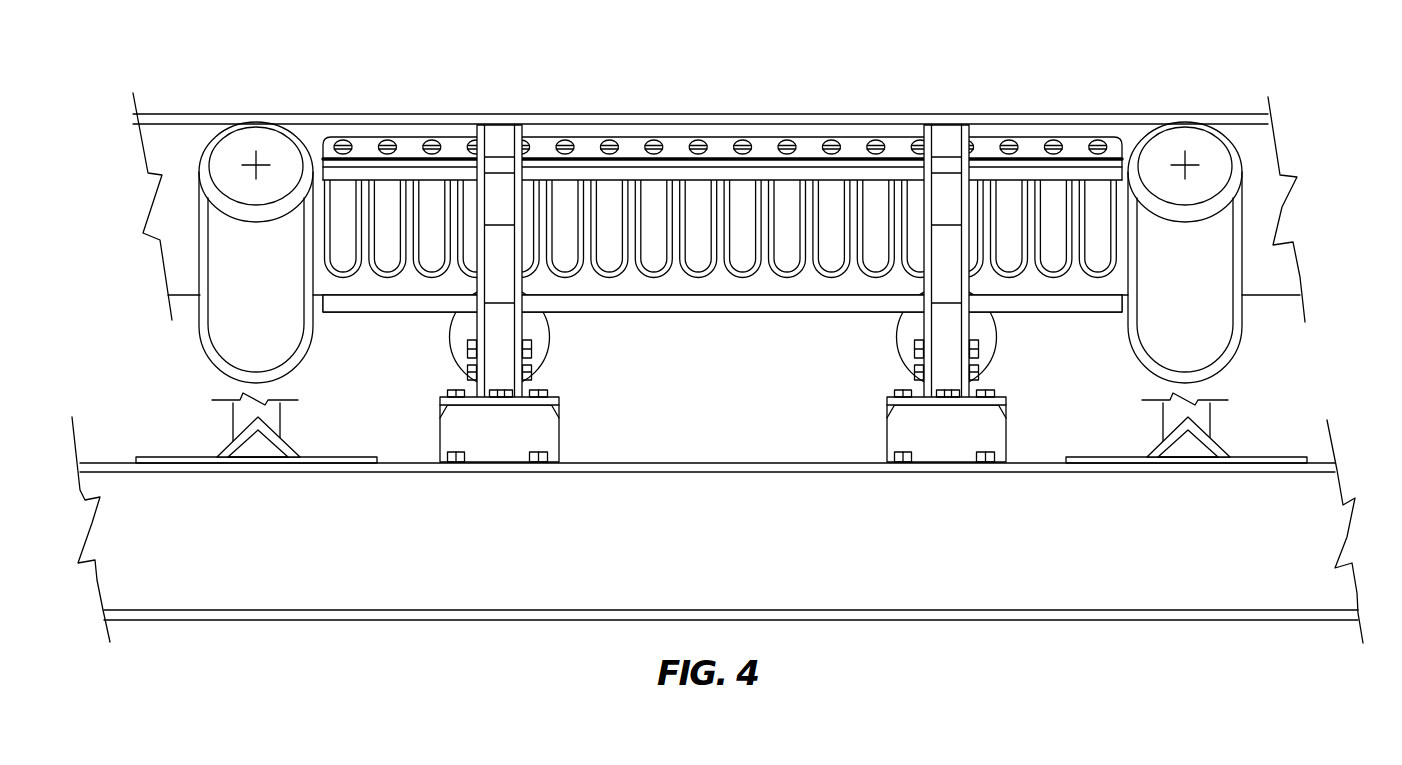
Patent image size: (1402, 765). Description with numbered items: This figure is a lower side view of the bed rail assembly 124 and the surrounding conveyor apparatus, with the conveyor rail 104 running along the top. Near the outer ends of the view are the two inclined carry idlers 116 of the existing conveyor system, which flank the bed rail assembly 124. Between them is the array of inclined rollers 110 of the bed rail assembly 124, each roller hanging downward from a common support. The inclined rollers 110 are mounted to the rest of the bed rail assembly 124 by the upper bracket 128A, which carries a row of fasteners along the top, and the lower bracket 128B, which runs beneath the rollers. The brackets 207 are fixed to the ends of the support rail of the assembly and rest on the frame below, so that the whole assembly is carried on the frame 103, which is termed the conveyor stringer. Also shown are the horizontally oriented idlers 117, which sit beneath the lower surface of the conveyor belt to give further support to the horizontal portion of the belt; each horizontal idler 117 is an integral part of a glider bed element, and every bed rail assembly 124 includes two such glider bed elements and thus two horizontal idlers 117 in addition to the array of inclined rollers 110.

The frame 103 is at (345, 585).
The conveyor rail 104 is at (408, 114).
The inclined rollers 110 is at (340, 255).
The inclined carry idlers 116 is at (237, 320).
The idlers 117 is at (550, 347).
The bed rail assembly 124 is at (722, 220).
The upper bracket 128A is at (722, 114).
The lower bracket 128B is at (865, 303).
The brackets 207 is at (519, 436).